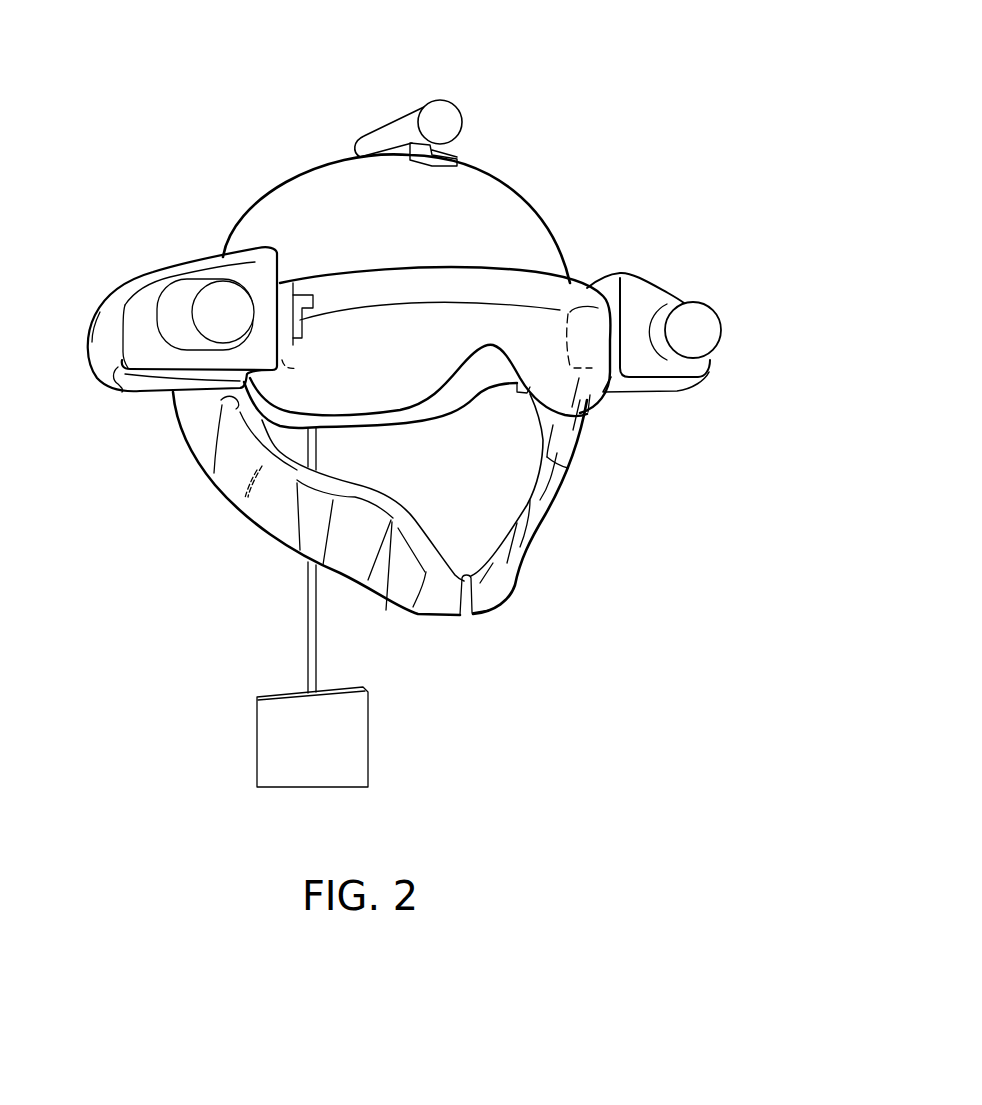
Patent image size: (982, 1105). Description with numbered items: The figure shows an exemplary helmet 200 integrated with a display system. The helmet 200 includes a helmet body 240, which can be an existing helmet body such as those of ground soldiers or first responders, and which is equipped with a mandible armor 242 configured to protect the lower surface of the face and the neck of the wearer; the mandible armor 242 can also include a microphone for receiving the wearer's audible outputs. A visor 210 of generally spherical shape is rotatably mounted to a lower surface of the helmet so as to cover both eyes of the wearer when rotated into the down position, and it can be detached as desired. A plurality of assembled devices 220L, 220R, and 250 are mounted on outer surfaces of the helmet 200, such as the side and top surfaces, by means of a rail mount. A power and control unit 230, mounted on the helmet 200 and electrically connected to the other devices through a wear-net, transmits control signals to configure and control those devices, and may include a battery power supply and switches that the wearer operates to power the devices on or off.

The helmet 200 is at (572, 66).
The visor 210 is at (530, 291).
The assembled device 220L is at (217, 303).
The assembled device 220R is at (707, 324).
The power and control unit 230 is at (369, 738).
The helmet body 240 is at (510, 185).
The mandible armor 242 is at (531, 551).
The assembled device 250 is at (398, 115).